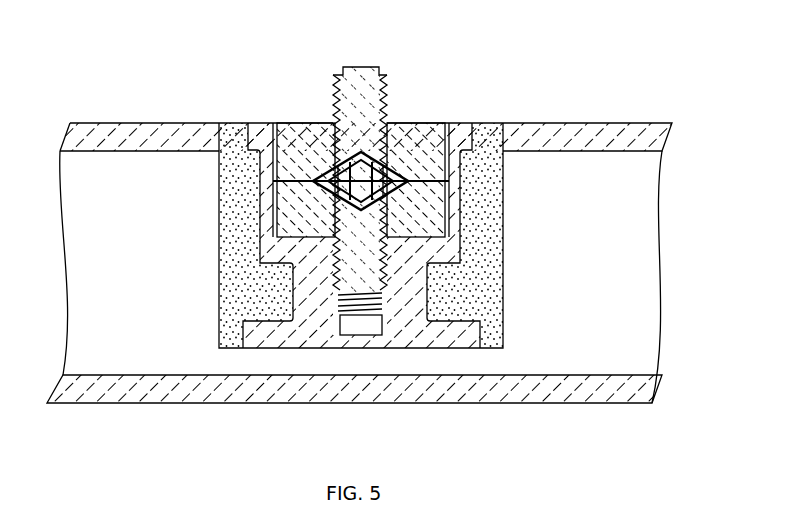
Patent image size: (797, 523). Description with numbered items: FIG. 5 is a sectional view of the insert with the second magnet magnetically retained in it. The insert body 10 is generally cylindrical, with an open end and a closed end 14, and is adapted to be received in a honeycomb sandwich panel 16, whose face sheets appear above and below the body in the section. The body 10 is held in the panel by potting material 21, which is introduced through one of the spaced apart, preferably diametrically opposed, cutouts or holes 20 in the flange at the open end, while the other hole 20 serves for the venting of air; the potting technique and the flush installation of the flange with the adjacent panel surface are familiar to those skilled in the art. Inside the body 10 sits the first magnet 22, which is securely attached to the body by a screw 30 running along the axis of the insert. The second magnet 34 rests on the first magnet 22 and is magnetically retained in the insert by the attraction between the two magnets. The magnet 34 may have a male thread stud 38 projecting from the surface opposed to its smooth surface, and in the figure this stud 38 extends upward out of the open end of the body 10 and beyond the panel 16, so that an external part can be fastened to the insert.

The insert body 10 is at (414, 289).
The closed end 14 is at (367, 349).
The honeycomb sandwich panel 16 is at (615, 135).
The cutouts or holes 20 is at (490, 126).
The potting material 21 is at (237, 182).
The first magnet 22 is at (428, 197).
The screw 30 is at (357, 250).
The magnet 34 is at (310, 139).
The male thread stud 38 is at (367, 83).